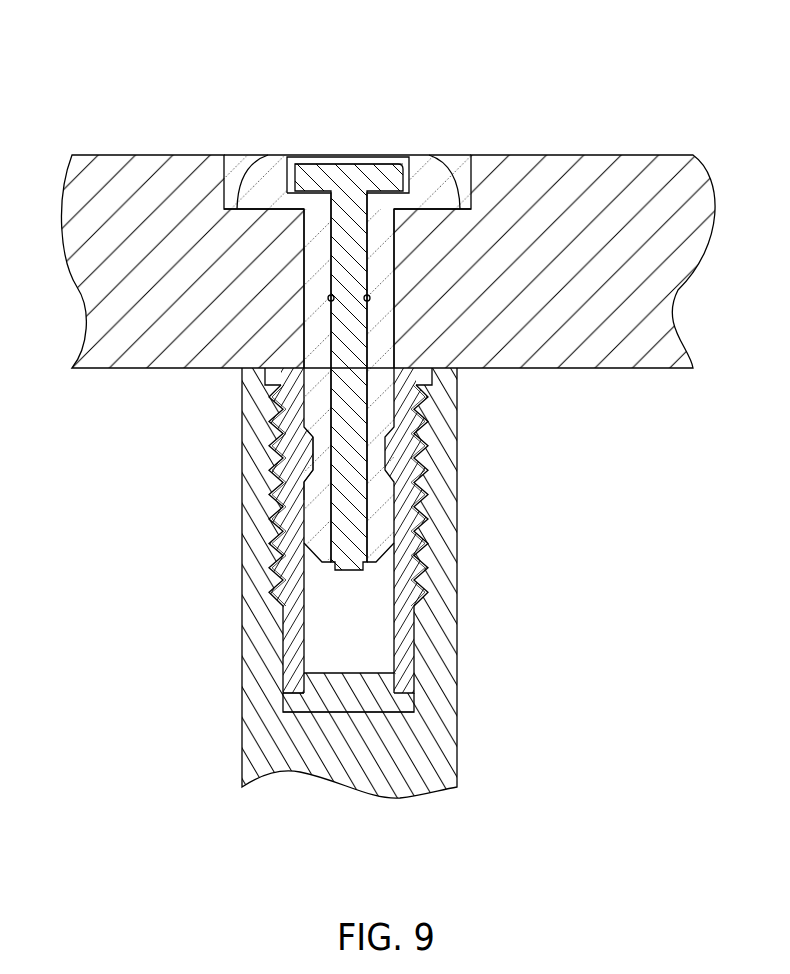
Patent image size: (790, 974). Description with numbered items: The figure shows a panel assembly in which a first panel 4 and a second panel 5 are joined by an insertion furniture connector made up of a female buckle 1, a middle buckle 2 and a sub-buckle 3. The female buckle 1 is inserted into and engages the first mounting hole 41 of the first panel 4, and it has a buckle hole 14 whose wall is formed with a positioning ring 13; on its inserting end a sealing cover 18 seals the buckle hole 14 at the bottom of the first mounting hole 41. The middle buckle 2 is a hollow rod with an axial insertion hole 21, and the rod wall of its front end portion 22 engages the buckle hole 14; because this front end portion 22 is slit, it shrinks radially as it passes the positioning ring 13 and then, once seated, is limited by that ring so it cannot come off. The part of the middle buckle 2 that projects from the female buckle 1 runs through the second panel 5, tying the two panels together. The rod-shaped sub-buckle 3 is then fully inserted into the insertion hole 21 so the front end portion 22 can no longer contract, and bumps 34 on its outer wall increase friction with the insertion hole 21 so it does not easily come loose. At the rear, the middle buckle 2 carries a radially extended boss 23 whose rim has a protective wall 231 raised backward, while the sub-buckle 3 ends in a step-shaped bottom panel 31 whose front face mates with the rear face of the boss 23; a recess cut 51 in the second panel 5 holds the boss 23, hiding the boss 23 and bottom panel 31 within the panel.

The female buckle 1 is at (402, 632).
The middle buckle 2 is at (308, 318).
The sub-buckle 3 is at (347, 247).
The first panel 4 is at (443, 595).
The second panel 5 is at (157, 278).
The positioning ring 13 is at (388, 462).
The buckle hole 14 is at (368, 647).
The sealing cover 18 is at (303, 705).
The insertion hole 21 is at (313, 459).
The front end portion 22 is at (315, 490).
The boss 23 is at (437, 183).
The bottom panel 31 is at (305, 173).
The bumps 34 is at (372, 297).
The first mounting hole 41 is at (415, 712).
The recess cut 51 is at (234, 175).
The protective wall 231 is at (418, 160).